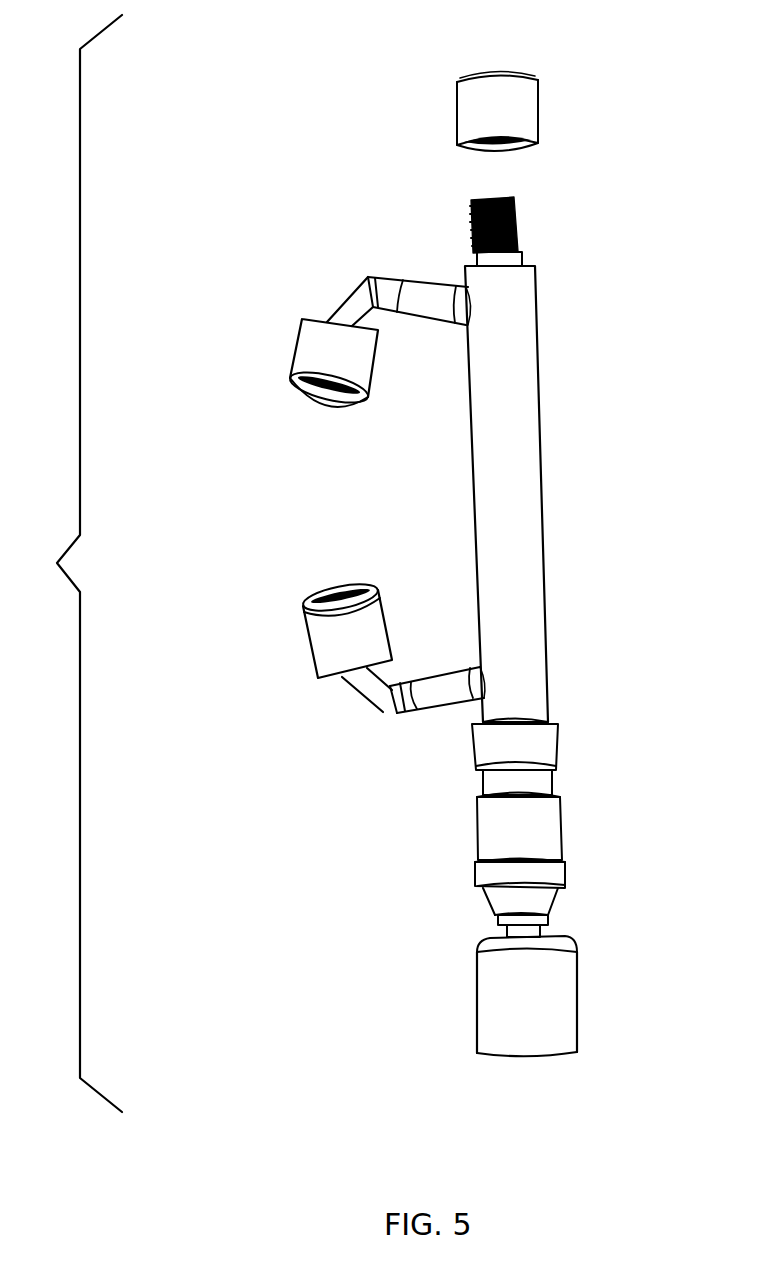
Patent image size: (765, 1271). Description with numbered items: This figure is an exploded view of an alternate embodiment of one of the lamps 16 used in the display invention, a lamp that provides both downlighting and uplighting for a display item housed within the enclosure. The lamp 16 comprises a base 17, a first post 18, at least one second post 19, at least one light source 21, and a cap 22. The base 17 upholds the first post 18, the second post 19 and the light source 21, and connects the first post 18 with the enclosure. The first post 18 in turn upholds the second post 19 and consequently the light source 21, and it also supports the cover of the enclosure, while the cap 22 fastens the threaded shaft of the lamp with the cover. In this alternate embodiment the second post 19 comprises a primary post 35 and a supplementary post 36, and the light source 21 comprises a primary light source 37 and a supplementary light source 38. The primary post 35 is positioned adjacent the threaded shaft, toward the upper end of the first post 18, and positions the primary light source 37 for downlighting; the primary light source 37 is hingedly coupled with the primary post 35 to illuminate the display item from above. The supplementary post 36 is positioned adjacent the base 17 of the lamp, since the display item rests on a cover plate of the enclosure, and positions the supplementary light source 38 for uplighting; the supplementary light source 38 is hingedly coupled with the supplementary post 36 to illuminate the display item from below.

The lamp 16 is at (214, 506).
The base 17 is at (572, 980).
The first post 18 is at (533, 432).
The second post 19 is at (411, 262).
The light source 21 is at (362, 418).
The cap 22 is at (537, 80).
The primary post 35 is at (448, 289).
The supplementary post 36 is at (455, 680).
The primary light source 37 is at (300, 325).
The supplementary light source 38 is at (313, 653).